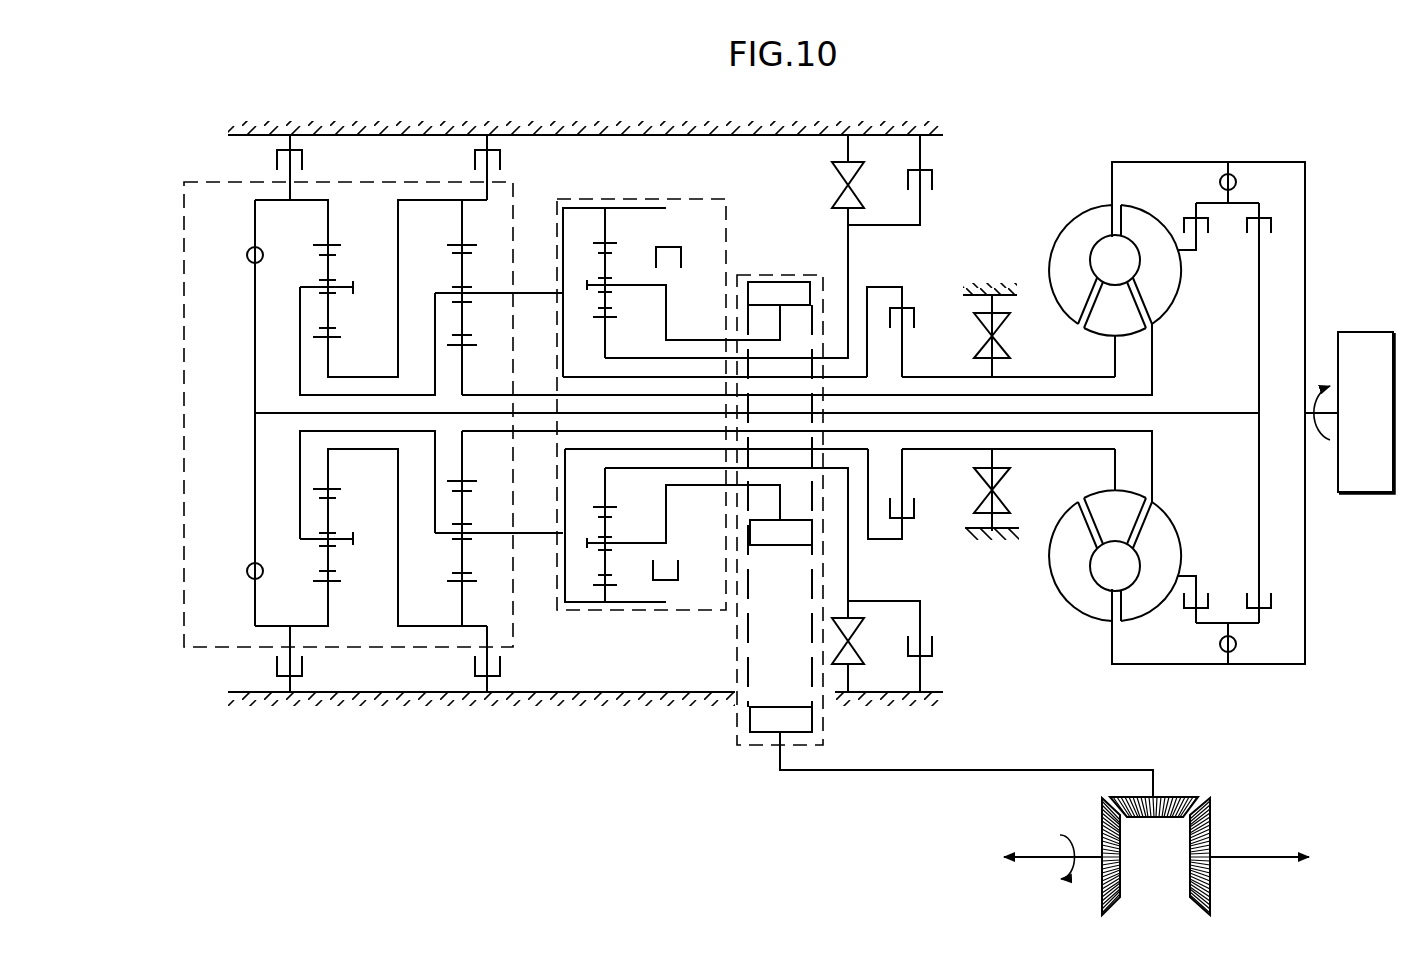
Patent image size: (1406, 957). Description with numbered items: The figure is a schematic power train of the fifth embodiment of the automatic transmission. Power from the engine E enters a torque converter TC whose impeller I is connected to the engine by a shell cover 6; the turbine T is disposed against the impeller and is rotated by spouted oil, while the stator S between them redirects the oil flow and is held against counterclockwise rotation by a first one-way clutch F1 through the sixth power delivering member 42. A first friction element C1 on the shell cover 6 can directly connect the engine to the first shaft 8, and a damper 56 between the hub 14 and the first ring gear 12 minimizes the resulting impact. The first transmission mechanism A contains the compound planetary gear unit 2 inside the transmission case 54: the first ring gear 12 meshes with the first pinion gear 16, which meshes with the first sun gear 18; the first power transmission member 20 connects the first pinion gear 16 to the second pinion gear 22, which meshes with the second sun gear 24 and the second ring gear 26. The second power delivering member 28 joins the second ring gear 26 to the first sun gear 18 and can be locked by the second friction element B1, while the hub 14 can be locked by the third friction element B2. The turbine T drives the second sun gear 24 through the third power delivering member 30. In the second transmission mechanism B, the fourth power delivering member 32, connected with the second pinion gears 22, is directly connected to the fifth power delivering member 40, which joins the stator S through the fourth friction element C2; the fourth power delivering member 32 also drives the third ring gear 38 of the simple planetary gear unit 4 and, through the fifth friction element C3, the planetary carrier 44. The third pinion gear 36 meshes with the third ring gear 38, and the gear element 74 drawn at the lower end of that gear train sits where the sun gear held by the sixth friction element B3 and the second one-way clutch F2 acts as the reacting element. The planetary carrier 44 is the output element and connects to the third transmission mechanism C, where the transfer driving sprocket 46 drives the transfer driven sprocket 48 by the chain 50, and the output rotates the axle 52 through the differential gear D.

The compound planetary gear unit 2 is at (376, 413).
The simple planetary gear unit 4 is at (668, 375).
The shell cover 6 is at (1205, 161).
The first shaft 8 is at (1209, 412).
The first ring gear 12 is at (323, 244).
The hub 14 is at (254, 336).
The first pinion gear 16 is at (333, 329).
The first sun gear 18 is at (333, 340).
The first power transmission member 20 is at (320, 398).
The second pinion gear 22 is at (465, 265).
The second sun gear 24 is at (465, 350).
The second ring gear 26 is at (460, 244).
The second power delivering member 28 is at (397, 228).
The third power delivering member 30 is at (1143, 398).
The fourth power delivering member 32 is at (536, 296).
The third pinion gear 36 is at (612, 314).
The third ring gear 38 is at (612, 244).
The fifth power delivering member 40 is at (872, 292).
The sixth power delivering member 42 is at (938, 377).
The planetary carrier 44 is at (666, 328).
The transfer driving sprocket 46 is at (780, 546).
The transfer driven sprocket 48 is at (815, 722).
The chain 50 is at (748, 641).
The axle 52 is at (1262, 857).
The transmission case 54 is at (490, 134).
The damper 56 is at (247, 256).
The ring gear 74 is at (600, 320).
The first transmission mechanism A is at (521, 205).
The second transmission mechanism B is at (648, 197).
The third transmission mechanism C is at (732, 730).
The differential gear D is at (1086, 820).
The engine E is at (1349, 412).
The torque converter TC is at (1130, 156).
The impeller I is at (1068, 243).
The turbine T is at (1165, 292).
The stator S is at (1108, 320).
The second friction element B1 is at (501, 413).
The third friction element B2 is at (304, 413).
The sixth friction element B3 is at (906, 413).
The first friction element C1 is at (1238, 406).
The fourth friction element C2 is at (914, 400).
The fifth friction element C3 is at (683, 413).
The first one-way clutch F1 is at (1000, 411).
The second one-way clutch F2 is at (748, 413).